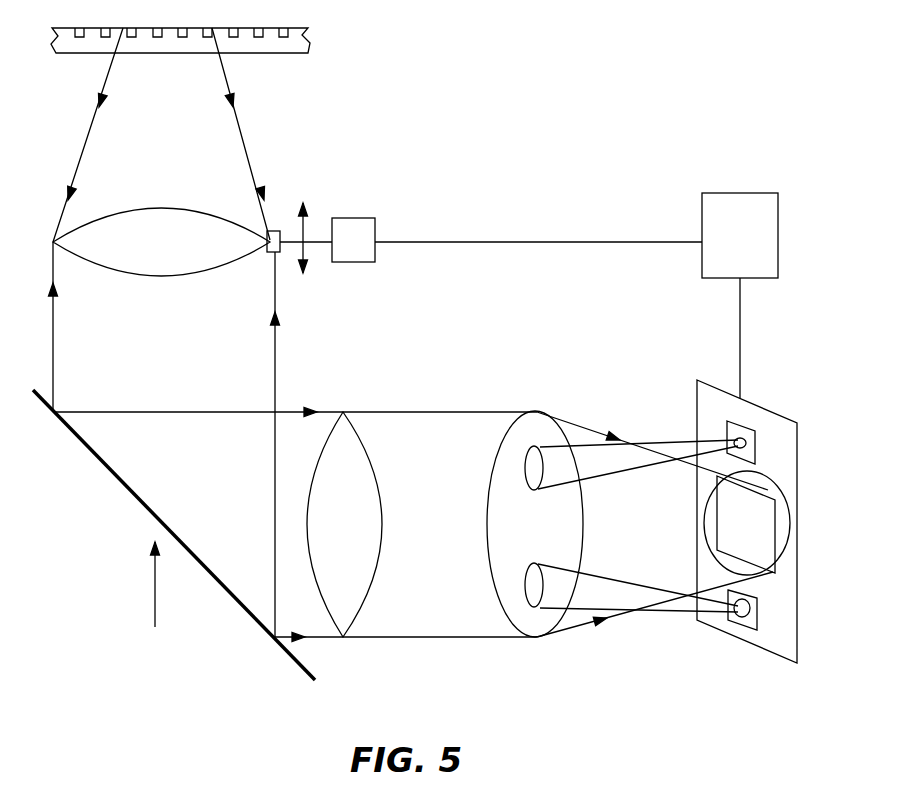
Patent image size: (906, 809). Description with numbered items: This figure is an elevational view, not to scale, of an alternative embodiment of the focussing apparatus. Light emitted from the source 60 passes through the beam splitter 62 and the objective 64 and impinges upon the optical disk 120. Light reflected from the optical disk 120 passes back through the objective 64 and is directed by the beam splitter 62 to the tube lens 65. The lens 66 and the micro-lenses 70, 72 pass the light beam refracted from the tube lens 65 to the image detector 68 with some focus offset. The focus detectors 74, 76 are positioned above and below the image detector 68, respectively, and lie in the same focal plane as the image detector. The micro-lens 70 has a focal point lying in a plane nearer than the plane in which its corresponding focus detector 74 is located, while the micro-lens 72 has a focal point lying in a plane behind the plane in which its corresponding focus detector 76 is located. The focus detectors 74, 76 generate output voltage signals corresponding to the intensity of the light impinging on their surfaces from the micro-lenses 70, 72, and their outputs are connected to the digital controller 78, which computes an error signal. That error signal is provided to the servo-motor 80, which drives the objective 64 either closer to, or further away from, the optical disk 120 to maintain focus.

The optical disk 120 is at (263, 53).
The objective 64 is at (176, 258).
The servo-motor 80 is at (369, 256).
The digital controller 78 is at (757, 253).
The beam splitter 62 is at (111, 474).
The source 60 is at (181, 629).
The tube lens 65 is at (372, 447).
The lens 66 is at (487, 543).
The micro-lens 70 is at (525, 450).
The micro-lens 72 is at (516, 607).
The focus detector 74 is at (758, 432).
The image detector 68 is at (761, 540).
The focus detector 76 is at (732, 619).